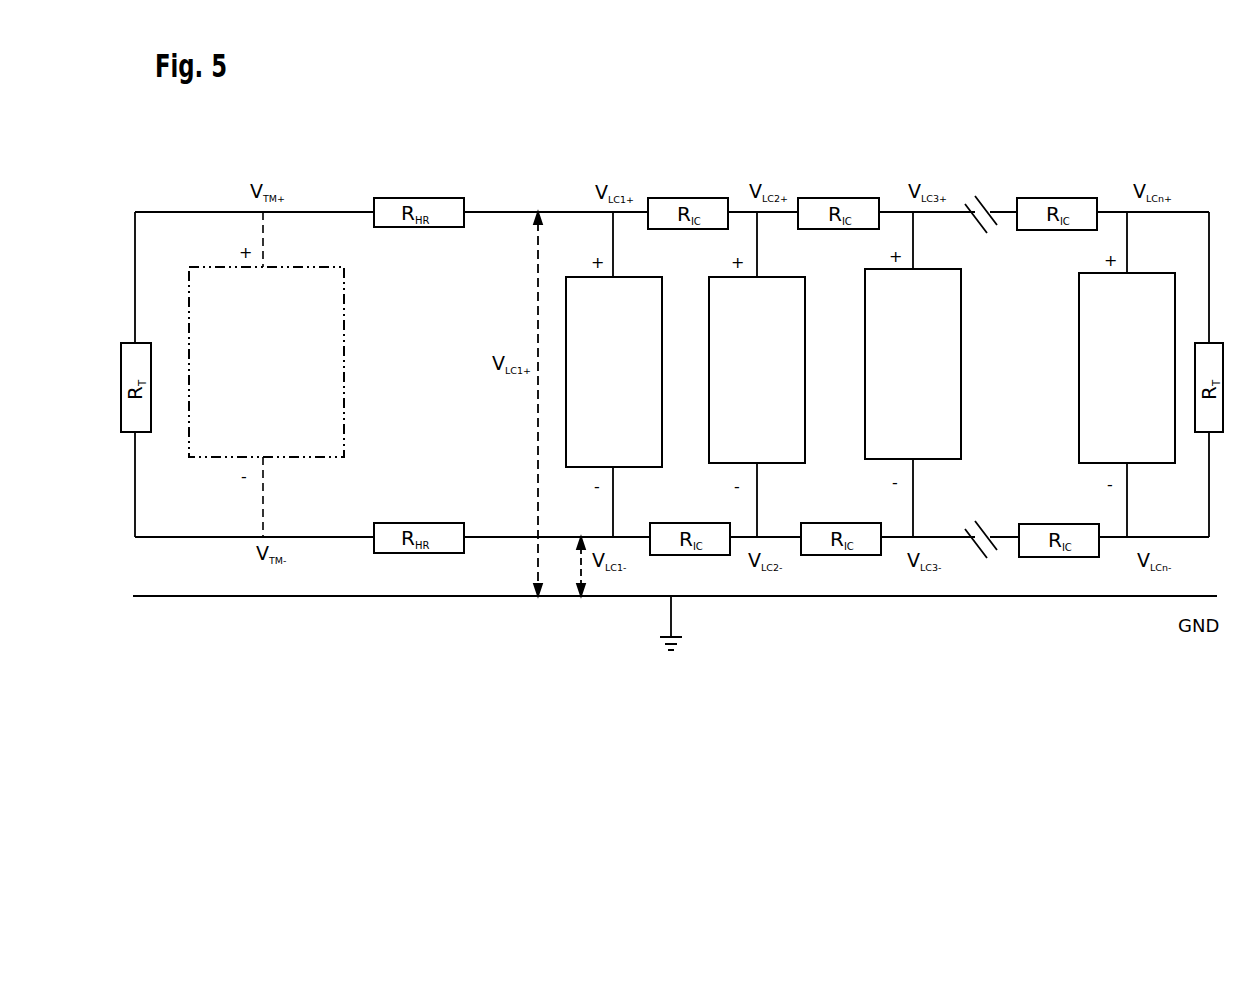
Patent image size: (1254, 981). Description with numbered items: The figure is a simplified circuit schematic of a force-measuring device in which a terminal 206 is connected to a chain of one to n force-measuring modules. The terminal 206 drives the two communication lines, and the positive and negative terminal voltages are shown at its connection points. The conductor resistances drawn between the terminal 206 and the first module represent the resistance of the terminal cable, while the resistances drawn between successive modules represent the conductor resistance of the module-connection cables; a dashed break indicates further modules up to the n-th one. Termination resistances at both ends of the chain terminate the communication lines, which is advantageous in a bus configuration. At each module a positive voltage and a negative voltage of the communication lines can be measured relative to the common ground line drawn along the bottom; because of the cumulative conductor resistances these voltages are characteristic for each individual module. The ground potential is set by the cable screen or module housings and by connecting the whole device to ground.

The terminal 206 is at (266, 374).